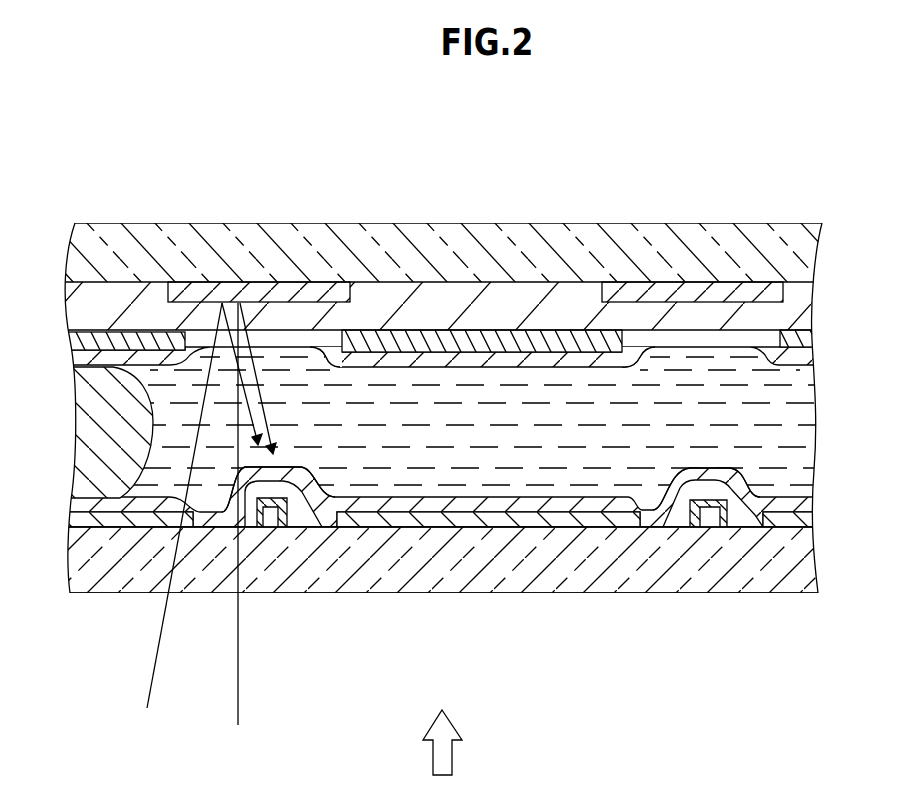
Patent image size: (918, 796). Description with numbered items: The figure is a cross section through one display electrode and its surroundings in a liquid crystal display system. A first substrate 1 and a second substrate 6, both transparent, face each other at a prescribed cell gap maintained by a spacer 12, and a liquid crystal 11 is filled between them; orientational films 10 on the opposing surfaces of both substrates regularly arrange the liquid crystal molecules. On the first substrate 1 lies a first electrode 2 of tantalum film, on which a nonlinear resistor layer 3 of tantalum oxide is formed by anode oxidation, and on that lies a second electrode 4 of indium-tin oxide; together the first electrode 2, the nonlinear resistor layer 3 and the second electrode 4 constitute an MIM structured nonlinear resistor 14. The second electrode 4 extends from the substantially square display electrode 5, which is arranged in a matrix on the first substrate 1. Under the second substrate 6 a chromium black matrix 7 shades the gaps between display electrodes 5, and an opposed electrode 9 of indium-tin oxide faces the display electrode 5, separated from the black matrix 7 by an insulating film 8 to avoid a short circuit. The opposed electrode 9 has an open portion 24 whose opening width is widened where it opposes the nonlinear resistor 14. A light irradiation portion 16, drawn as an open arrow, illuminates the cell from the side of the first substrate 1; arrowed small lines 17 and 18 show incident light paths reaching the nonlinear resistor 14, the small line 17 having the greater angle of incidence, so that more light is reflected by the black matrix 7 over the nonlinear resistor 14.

The first substrate 1 is at (800, 563).
The first electrode 2 is at (270, 527).
The nonlinear resistor layer 3 is at (288, 527).
The second electrode 4 is at (300, 492).
The display electrode 5 is at (493, 520).
The second substrate 6 is at (797, 253).
The black matrix 7 is at (316, 282).
The insulating film 8 is at (787, 320).
The opposed electrode 9 is at (77, 345).
The orientational film 10 is at (813, 357).
The liquid crystal 11 is at (805, 433).
The spacer 12 is at (105, 418).
The nonlinear resistor 14 is at (292, 460).
The light irradiation portion 16 is at (454, 753).
The small line 17 is at (156, 660).
The small line 18 is at (239, 697).
The open portion 24 is at (338, 365).